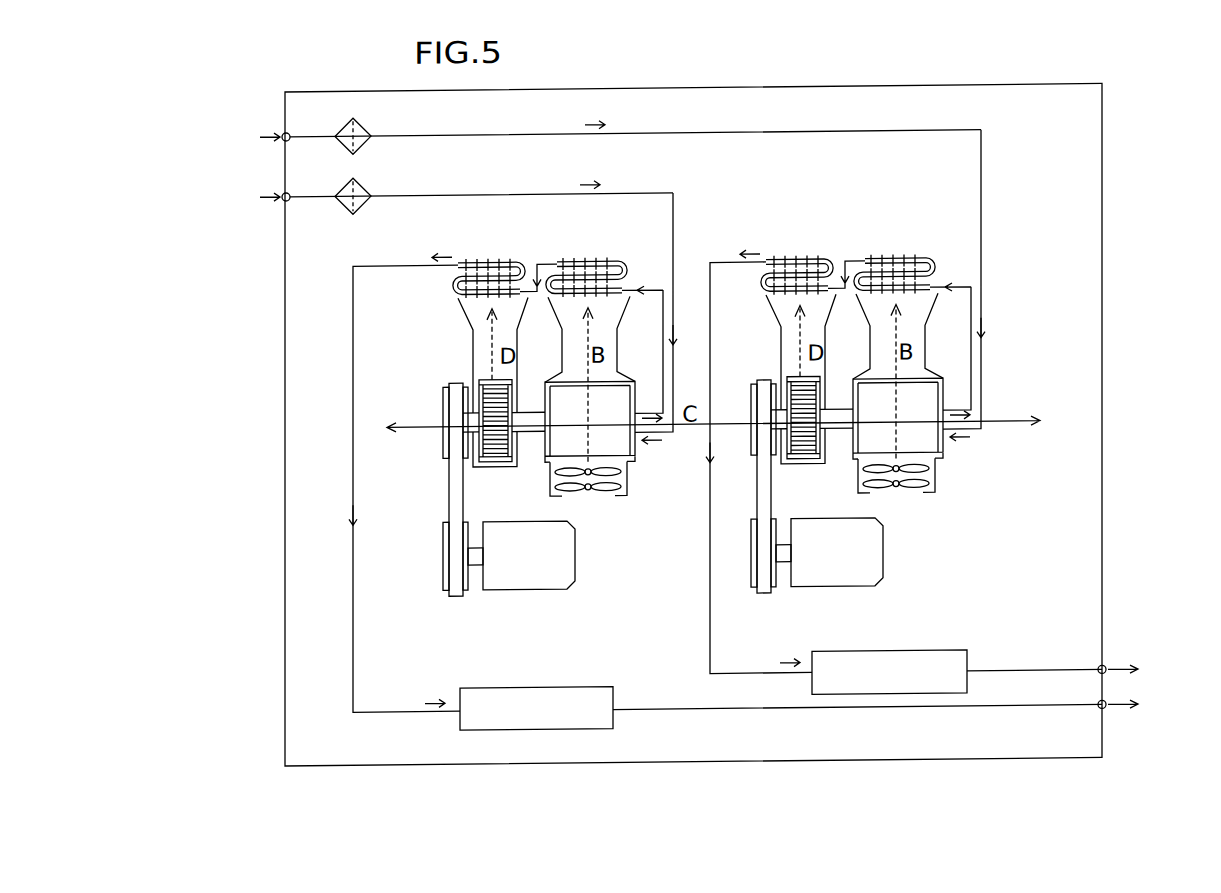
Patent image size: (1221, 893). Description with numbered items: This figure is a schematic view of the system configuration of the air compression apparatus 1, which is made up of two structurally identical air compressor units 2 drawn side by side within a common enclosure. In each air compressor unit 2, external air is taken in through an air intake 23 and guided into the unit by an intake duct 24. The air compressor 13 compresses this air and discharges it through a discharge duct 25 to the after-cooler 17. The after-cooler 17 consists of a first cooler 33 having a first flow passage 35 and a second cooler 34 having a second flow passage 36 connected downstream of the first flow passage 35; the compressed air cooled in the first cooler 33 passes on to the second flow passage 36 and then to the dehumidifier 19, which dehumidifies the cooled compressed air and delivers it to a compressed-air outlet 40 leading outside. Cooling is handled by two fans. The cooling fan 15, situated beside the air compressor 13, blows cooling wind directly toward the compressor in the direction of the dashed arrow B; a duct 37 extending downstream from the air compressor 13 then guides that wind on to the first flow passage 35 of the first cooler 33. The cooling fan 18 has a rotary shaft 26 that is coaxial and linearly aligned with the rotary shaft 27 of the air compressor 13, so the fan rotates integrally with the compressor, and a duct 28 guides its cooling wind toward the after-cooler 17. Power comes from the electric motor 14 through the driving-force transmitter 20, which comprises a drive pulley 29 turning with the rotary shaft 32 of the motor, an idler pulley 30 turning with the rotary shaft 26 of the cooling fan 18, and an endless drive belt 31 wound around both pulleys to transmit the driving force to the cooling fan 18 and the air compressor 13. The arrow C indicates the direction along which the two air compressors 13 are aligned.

The air compression apparatus 1 is at (991, 69).
The air compressor unit 2 is at (319, 421).
The air compressor 13 is at (625, 453).
The electric motor 14 is at (518, 592).
The cooling fan 15 is at (615, 484).
The after-cooler 17 is at (543, 239).
The cooling fan 18 is at (505, 465).
The dehumidifier 19 is at (537, 690).
The driving-force transmitter 20 is at (441, 364).
The air intake 23 is at (283, 134).
The intake duct 24 is at (632, 137).
The discharge duct 25 is at (673, 277).
The rotary shaft 26 is at (472, 462).
The rotary shaft 27 is at (528, 415).
The duct 28 is at (473, 328).
The drive pulley 29 is at (445, 592).
The idler pulley 30 is at (447, 452).
The drive belt 31 is at (449, 512).
The rotary shaft 32 is at (476, 567).
The first cooler 33 is at (596, 247).
The second cooler 34 is at (480, 246).
The first flow passage 35 is at (582, 273).
The second flow passage 36 is at (487, 277).
The duct 37 is at (616, 364).
The compressed-air outlet 40 is at (1105, 674).